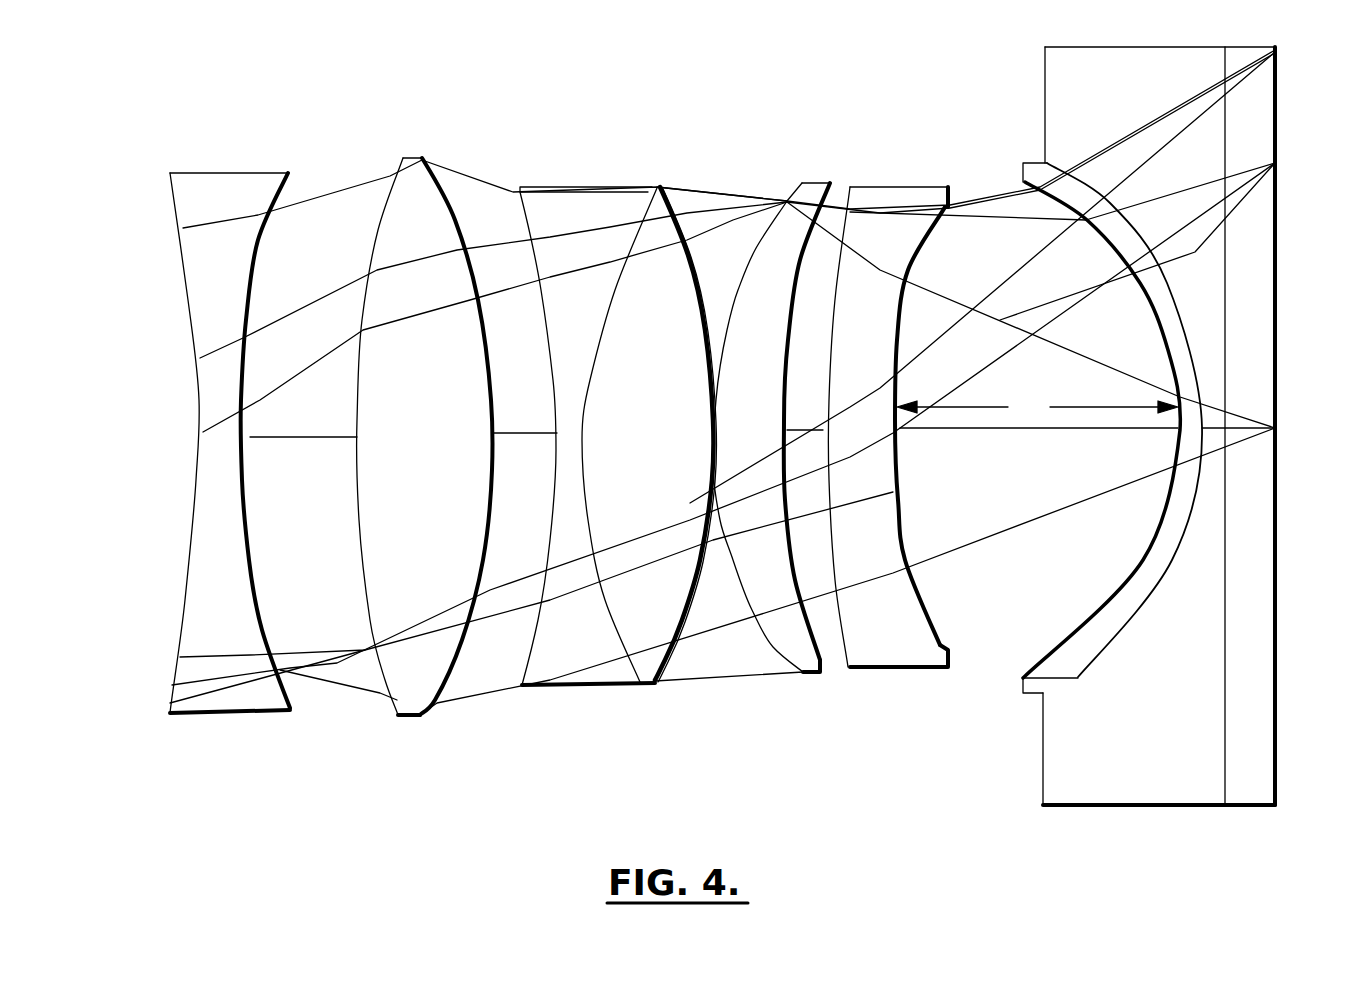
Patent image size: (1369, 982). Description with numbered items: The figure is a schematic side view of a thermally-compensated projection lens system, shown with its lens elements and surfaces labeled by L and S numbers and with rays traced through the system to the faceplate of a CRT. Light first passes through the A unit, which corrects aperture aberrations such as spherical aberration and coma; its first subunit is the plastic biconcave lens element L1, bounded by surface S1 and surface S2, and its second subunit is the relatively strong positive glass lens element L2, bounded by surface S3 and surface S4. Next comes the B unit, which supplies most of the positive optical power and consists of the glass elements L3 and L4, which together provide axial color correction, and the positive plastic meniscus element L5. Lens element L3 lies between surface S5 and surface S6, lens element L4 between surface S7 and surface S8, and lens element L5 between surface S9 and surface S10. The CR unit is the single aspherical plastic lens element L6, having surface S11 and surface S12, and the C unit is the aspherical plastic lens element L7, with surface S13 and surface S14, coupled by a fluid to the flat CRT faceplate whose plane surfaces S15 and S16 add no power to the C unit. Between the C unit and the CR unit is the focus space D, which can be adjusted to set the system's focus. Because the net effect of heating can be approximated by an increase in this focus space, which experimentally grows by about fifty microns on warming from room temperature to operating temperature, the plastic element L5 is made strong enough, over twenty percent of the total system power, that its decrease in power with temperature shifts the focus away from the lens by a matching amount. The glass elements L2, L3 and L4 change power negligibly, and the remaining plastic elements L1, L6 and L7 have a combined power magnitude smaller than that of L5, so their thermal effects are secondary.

The lens element L1 is at (200, 447).
The lens element L2 is at (418, 445).
The lens element L3 is at (578, 435).
The lens element L4 is at (728, 435).
The lens element L5 is at (787, 435).
The lens element L6 is at (919, 415).
The lens element L7 is at (1085, 434).
The surface 1 S1 is at (187, 610).
The surface 2 S2 is at (283, 688).
The surface 3 S3 is at (387, 677).
The surface 4 S4 is at (437, 690).
The surface 5 S5 is at (527, 645).
The surface 6 S6 is at (617, 643).
The surface 7 S7 is at (657, 680).
The surface 8 S8 is at (682, 633).
The surface 9 S9 is at (779, 650).
The surface 10 S10 is at (835, 640).
The surface 11 S11 is at (833, 647).
The surface 12 S12 is at (940, 632).
The surface 13 S13 is at (1069, 641).
The surface 14 S14 is at (1073, 682).
The surface 15 S15 is at (1223, 762).
The surface 16 S16 is at (1277, 766).
The focus space D is at (1037, 409).